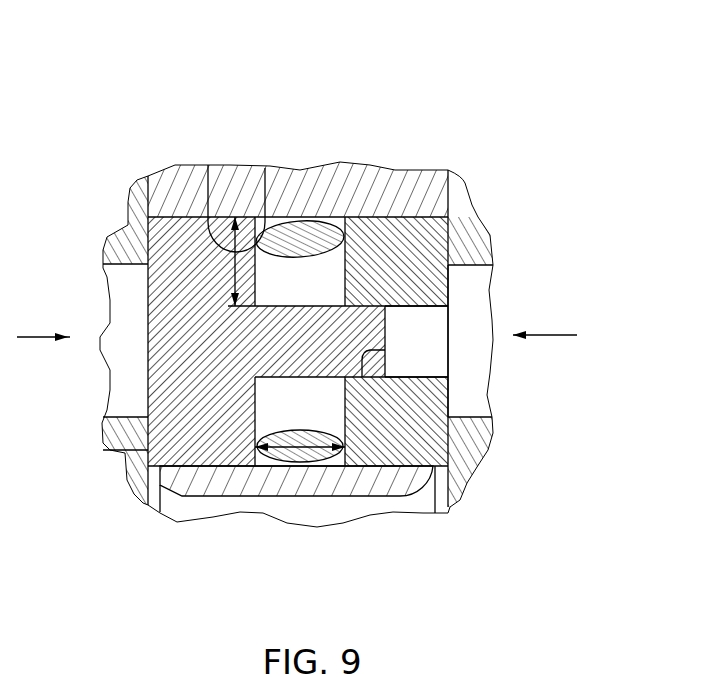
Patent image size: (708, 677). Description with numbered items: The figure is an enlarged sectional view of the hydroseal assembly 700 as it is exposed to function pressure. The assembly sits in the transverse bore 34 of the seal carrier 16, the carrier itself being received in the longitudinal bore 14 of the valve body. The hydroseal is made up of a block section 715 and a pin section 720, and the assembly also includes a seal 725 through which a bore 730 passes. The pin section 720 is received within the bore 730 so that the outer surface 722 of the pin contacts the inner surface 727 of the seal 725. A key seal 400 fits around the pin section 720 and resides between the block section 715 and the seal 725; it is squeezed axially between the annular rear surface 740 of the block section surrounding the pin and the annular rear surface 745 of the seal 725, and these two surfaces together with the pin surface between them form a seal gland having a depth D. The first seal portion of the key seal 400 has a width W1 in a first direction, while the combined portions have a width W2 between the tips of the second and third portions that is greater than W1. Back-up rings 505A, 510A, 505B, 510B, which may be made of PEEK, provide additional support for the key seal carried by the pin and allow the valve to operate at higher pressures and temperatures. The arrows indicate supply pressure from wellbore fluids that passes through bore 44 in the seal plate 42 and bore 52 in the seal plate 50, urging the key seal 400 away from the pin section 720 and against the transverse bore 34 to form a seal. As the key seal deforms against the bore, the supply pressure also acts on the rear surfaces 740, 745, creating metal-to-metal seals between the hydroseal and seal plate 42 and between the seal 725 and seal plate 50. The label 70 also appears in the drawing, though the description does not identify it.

The longitudinal bore 14 is at (441, 166).
The seal carrier 16 is at (392, 183).
The transverse bore 34 is at (165, 306).
The seal plate 42 is at (120, 237).
The bore 44 is at (130, 368).
The seal plate 50 is at (453, 221).
The bore 52 is at (470, 332).
The interface 70 is at (147, 278).
The key seal 400 is at (305, 460).
The back-up ring 505A is at (262, 462).
The back-up ring 505B is at (341, 458).
The back-up ring 510A is at (205, 512).
The back-up ring 510B is at (450, 470).
The hydroseal assembly 700 is at (473, 211).
The block section 715 is at (140, 456).
The pin section 720 is at (357, 329).
The outer surface 722 is at (357, 300).
The seal 725 is at (475, 248).
The inner surface 727 is at (385, 350).
The bore 730 is at (423, 323).
The annular rear surface 740 is at (264, 205).
The annular rear surface 745 is at (315, 222).
The depth D is at (213, 212).
The width W1 is at (300, 216).
The width W2 is at (298, 440).